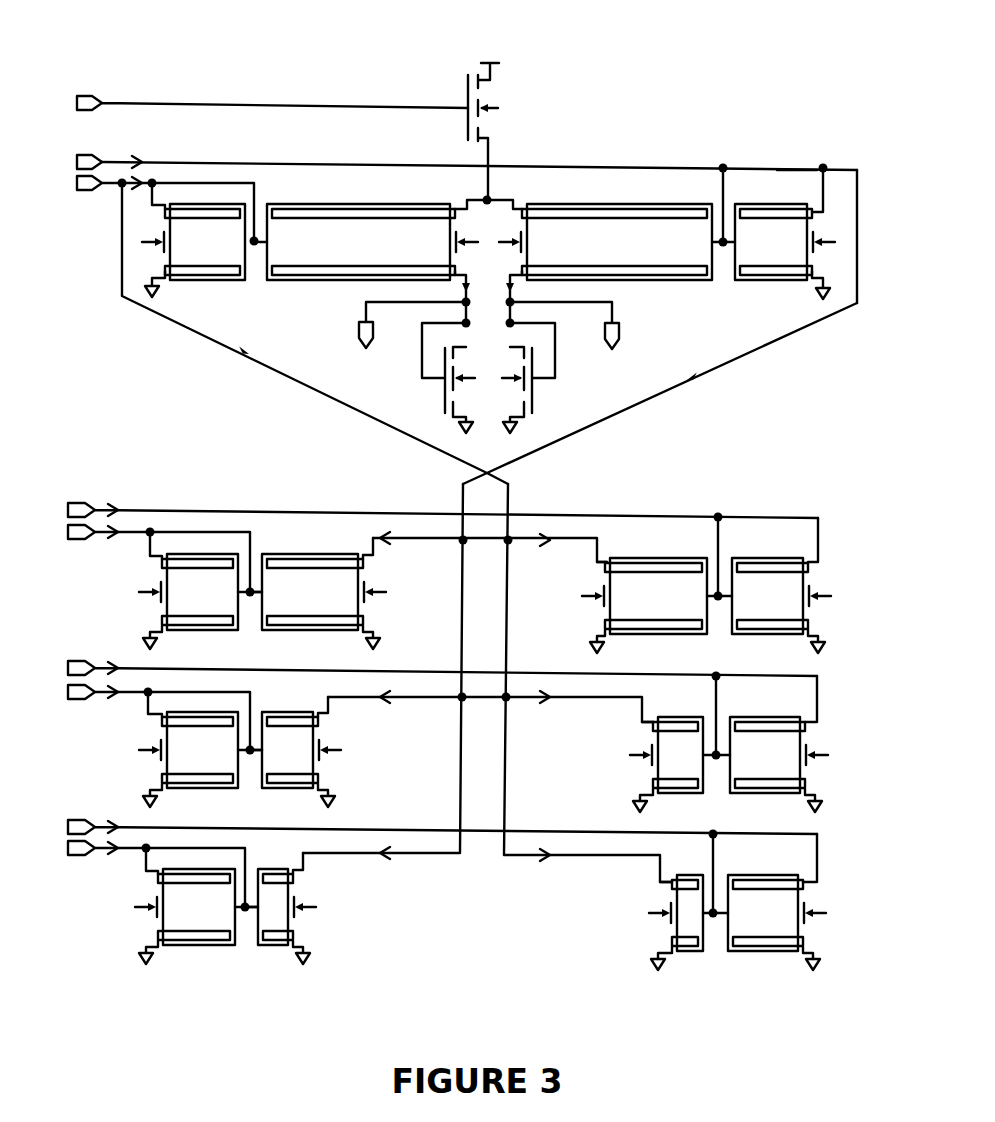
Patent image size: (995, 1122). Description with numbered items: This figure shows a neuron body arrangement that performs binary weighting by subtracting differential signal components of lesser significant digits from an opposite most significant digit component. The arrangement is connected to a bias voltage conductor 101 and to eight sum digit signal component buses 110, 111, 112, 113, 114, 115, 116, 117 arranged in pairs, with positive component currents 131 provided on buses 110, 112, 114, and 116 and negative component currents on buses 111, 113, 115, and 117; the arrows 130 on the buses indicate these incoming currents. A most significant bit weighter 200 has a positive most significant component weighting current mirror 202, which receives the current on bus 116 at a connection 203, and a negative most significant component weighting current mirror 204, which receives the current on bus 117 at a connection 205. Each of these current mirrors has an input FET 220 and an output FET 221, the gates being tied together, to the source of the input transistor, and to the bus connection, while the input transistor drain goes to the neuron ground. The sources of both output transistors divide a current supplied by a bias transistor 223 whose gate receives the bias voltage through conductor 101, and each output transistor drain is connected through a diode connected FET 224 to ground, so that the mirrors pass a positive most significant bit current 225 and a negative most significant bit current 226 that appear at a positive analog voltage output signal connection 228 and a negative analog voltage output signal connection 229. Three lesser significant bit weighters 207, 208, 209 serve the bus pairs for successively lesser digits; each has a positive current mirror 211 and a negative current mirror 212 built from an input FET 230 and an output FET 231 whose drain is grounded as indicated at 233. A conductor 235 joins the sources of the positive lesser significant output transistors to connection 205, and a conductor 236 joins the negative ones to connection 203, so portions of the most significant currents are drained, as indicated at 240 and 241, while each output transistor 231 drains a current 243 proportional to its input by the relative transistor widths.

The bias voltage conductor 101 is at (242, 102).
The sum digit signal component bus 110 is at (80, 818).
The sum digit signal component bus 111 is at (75, 850).
The sum digit signal component bus 112 is at (83, 662).
The sum digit signal component bus 113 is at (78, 700).
The sum digit signal component bus 114 is at (77, 505).
The sum digit signal component bus 115 is at (78, 540).
The sum digit signal component bus 116 is at (92, 155).
The sum digit signal component bus 117 is at (93, 190).
The signal direction arrow 130 is at (138, 157).
The positive component current 131 is at (140, 187).
The most significant bit weighter 200 is at (755, 384).
The positive most significant component weighting current mirror 202 is at (700, 199).
The connection 203 is at (777, 168).
The negative most significant component weighting current mirror 204 is at (286, 196).
The connection 205 is at (257, 193).
The lesser significant bit weighter 207 is at (829, 591).
The lesser significant bit weighter 208 is at (822, 746).
The lesser significant bit weighter 209 is at (822, 907).
The positive lesser significant component weighting current mirror 211 is at (720, 626).
The negative lesser significant component weighting current mirror 212 is at (248, 631).
The input FET 220 is at (202, 283).
The output FET 221 is at (408, 206).
The bias transistor 223 is at (483, 138).
The diode connected FET 224 is at (443, 397).
The positive most significant bit current 225 is at (517, 290).
The negative most significant bit current 226 is at (470, 290).
The positive analog voltage output signal connection 228 is at (617, 333).
The negative analog voltage output signal connection 229 is at (358, 328).
The input FET 230 is at (200, 553).
The output FET 231 is at (330, 552).
The ground connection 233 is at (378, 642).
The conductor 235 is at (297, 383).
The conductor 236 is at (565, 440).
The drained current portion 240 is at (245, 358).
The drained current portion 241 is at (688, 385).
The drained current 243 is at (380, 538).